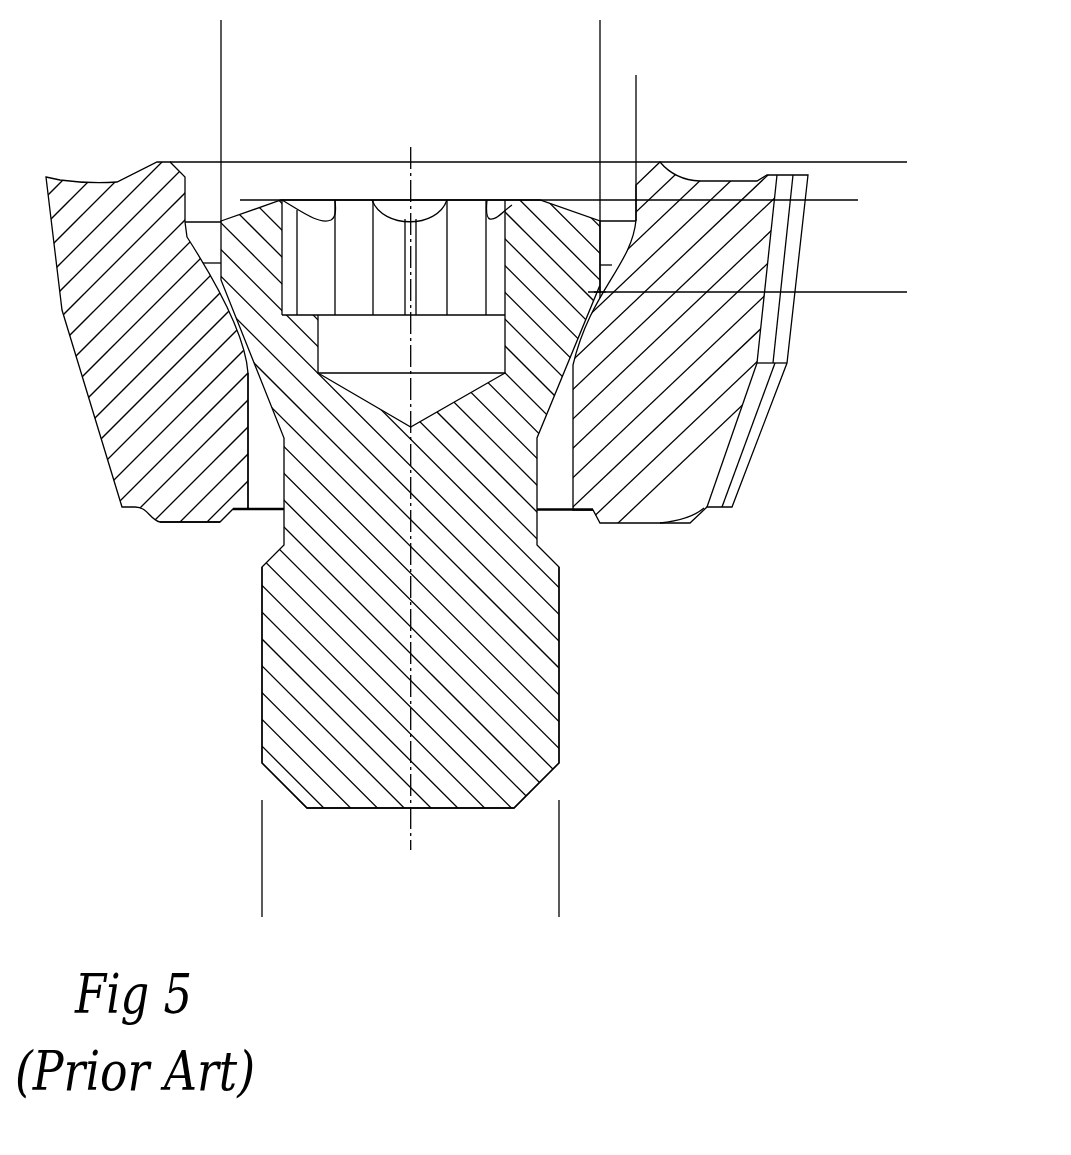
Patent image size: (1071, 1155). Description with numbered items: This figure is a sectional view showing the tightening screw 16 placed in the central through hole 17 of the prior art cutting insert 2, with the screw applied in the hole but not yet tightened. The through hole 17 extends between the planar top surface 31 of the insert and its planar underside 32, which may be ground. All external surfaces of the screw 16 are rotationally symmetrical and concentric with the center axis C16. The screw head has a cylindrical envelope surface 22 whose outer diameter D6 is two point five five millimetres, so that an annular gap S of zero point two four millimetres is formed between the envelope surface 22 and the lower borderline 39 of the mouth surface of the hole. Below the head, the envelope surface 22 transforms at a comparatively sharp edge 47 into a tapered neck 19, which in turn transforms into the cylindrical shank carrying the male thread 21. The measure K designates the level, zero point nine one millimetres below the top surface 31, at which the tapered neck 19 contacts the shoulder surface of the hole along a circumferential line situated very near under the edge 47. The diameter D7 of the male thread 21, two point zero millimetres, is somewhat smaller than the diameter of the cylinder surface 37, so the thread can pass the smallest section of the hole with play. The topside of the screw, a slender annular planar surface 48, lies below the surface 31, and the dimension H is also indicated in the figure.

The cutting insert 2 is at (681, 311).
The tightening screw 16 is at (535, 463).
The through hole 17 is at (553, 498).
The tapered neck 19 is at (577, 343).
The male thread 21 is at (562, 683).
The envelope surface 22 is at (221, 239).
The surface (topside) 31 is at (308, 343).
The underside 32 is at (185, 523).
The cylinder surface 37 is at (284, 486).
The lower borderline of the mouth surface 39 is at (622, 221).
The sharp edge 47 is at (598, 290).
The annular planar surface 48 is at (281, 200).
The center axis C16 is at (411, 147).
The outer diameter of the head D6 is at (600, 39).
The diameter of the male thread D7 is at (559, 897).
The annular gap S is at (662, 90).
The head height above surface H is at (842, 135).
The measure K (contact level) K is at (890, 162).